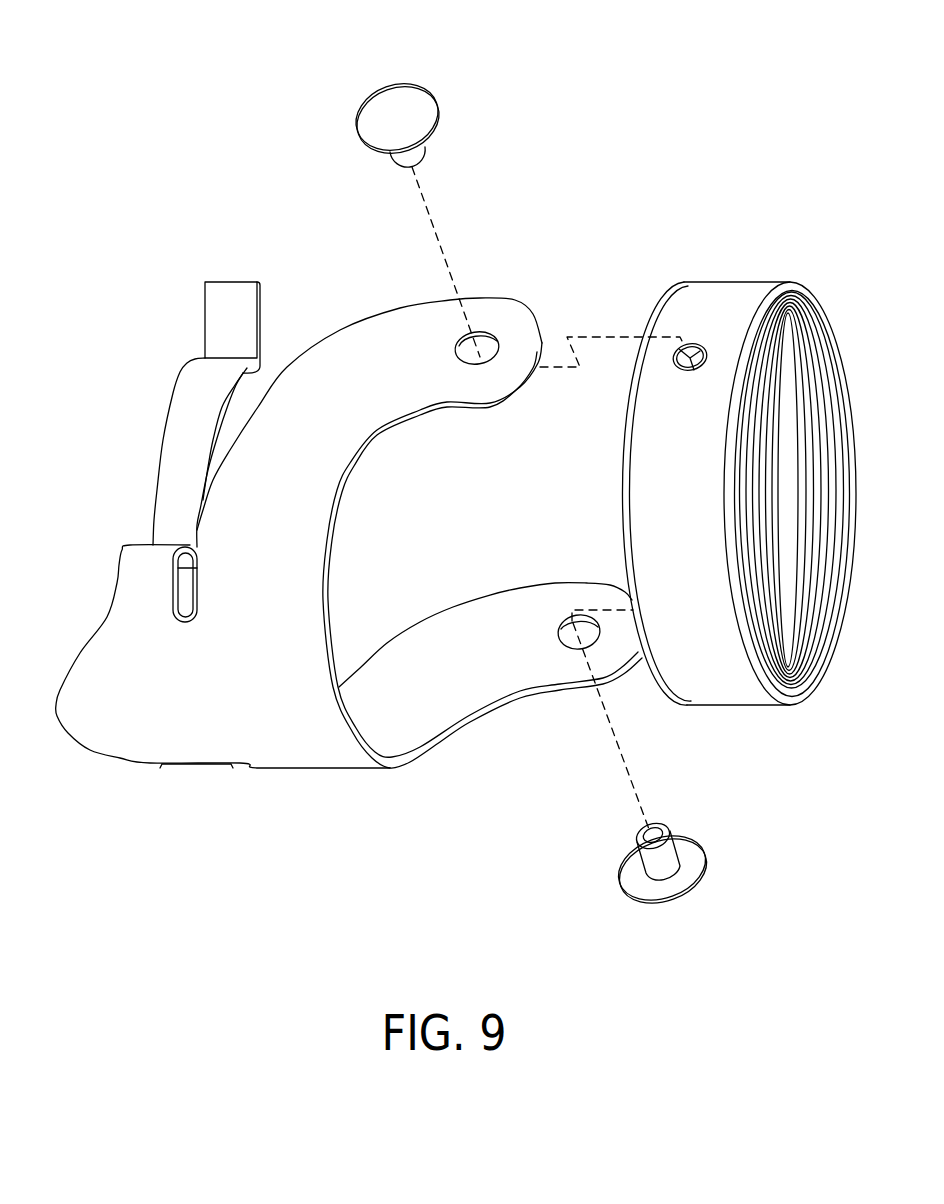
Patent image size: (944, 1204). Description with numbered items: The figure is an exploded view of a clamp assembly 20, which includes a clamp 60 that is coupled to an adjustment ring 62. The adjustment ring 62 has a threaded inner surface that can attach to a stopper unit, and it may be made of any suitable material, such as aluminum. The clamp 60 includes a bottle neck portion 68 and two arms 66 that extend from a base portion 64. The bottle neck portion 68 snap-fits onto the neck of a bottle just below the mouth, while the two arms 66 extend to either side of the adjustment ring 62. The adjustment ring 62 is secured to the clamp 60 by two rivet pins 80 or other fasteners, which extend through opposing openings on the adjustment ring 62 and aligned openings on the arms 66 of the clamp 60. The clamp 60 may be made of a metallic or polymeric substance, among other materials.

The clamp assembly 20 is at (840, 73).
The clamp 60 is at (363, 337).
The adjustment ring 62 is at (728, 281).
The base portion 64 is at (330, 593).
The arms 66 is at (511, 320).
The bottle neck portion 68 is at (187, 387).
The rivet pins 80 is at (355, 122).